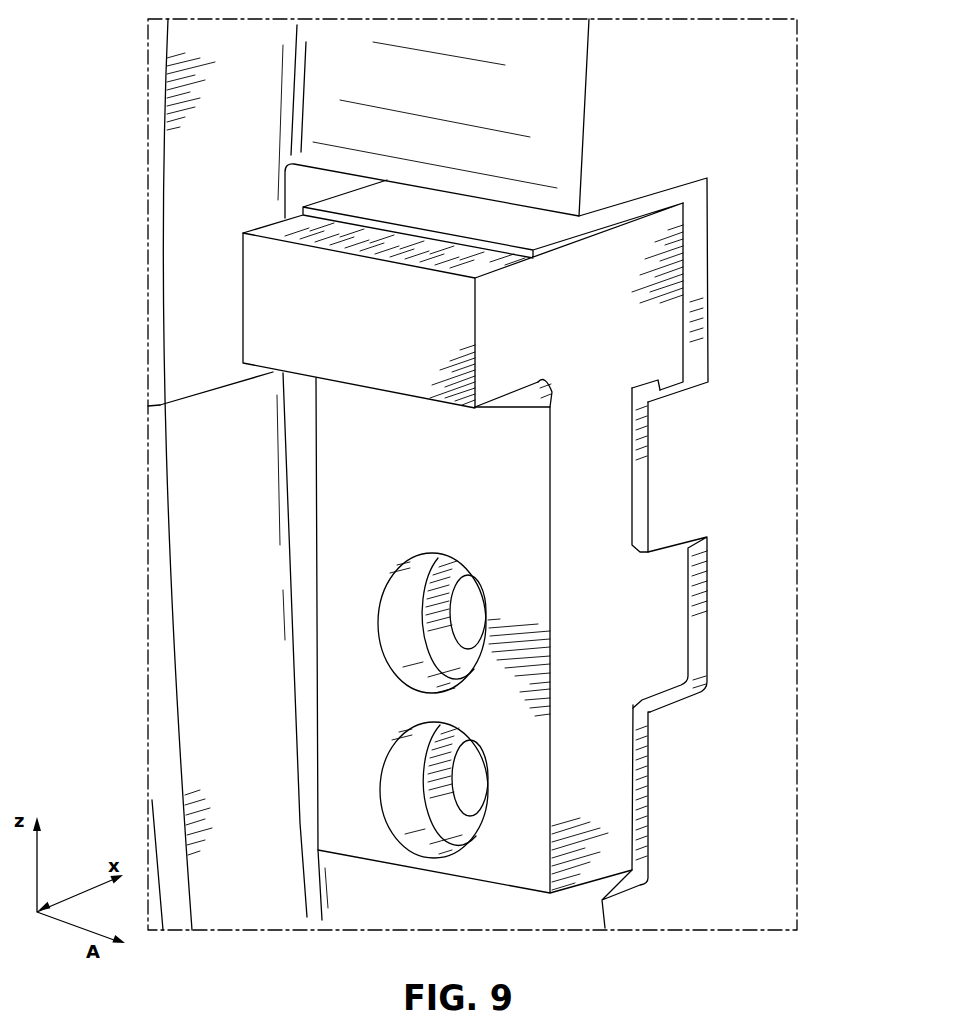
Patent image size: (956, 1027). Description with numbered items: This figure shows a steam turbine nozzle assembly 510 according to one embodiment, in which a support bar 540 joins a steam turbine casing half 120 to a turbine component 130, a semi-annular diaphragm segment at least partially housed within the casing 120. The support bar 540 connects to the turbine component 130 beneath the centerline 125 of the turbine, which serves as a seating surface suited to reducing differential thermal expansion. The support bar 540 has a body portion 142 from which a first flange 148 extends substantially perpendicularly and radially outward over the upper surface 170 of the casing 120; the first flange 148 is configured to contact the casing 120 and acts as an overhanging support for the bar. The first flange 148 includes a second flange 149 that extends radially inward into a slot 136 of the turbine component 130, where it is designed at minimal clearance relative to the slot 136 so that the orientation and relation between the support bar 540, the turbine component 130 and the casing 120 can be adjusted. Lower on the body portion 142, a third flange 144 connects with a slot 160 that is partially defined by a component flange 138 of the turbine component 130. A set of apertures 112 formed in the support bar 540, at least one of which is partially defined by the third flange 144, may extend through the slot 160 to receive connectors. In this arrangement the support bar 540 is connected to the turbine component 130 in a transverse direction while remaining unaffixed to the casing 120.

The steam turbine nozzle assembly 510 is at (150, 126).
The turbine component 130 is at (765, 92).
The steam turbine casing half 120 is at (228, 286).
The centerline 125 is at (192, 388).
The first flange 148 is at (379, 327).
The second flange 149 is at (677, 285).
The slot 136 is at (726, 258).
The upper surface 170 is at (663, 400).
The component flange 138 is at (697, 520).
The third flange 144 is at (678, 646).
The slot 160 is at (725, 560).
The support bar 540 is at (615, 411).
The body portion 142 is at (456, 491).
The set of apertures 112 is at (406, 782).